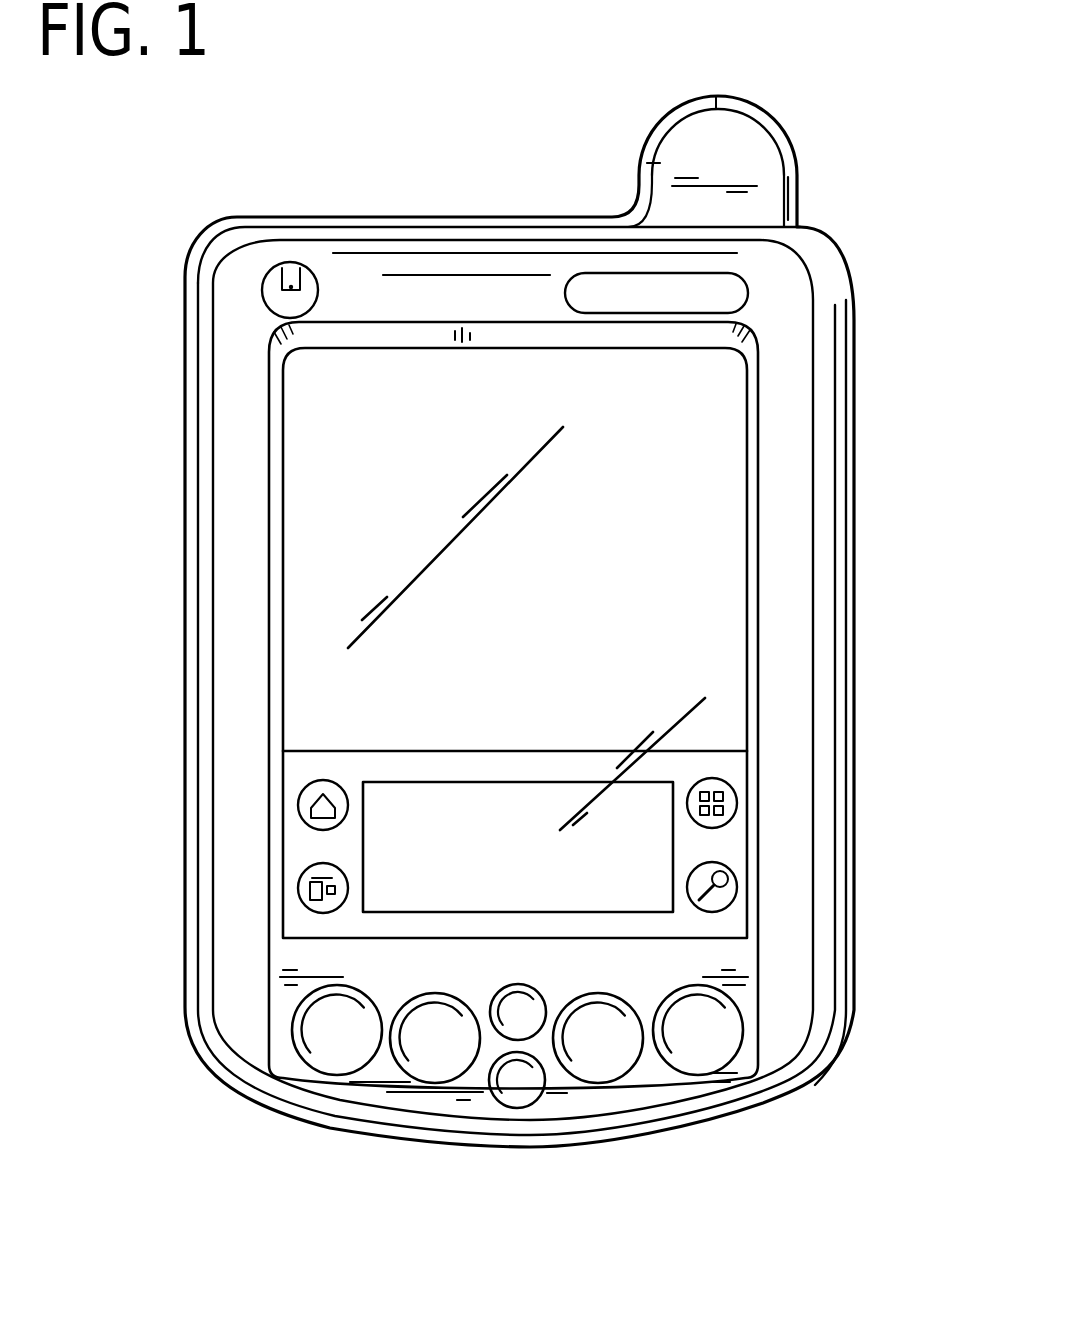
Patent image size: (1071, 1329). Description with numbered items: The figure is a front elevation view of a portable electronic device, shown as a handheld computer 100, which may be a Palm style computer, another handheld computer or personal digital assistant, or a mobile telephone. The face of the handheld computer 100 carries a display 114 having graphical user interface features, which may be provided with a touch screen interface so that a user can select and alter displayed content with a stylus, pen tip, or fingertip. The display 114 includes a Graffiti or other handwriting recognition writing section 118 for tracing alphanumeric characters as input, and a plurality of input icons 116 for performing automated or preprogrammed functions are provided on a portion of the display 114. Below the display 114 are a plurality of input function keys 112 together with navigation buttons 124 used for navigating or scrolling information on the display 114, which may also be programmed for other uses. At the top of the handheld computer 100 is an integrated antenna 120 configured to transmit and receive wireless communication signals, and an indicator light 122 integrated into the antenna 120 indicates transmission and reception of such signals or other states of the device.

The handheld computer 100 is at (448, 128).
The input function keys 112 is at (340, 1048).
The display 114 is at (548, 582).
The input icons 116 is at (305, 870).
The writing section 118 is at (532, 858).
The integrated antenna 120 is at (738, 162).
The indicator light 122 is at (678, 110).
The navigation buttons 124 is at (523, 1095).